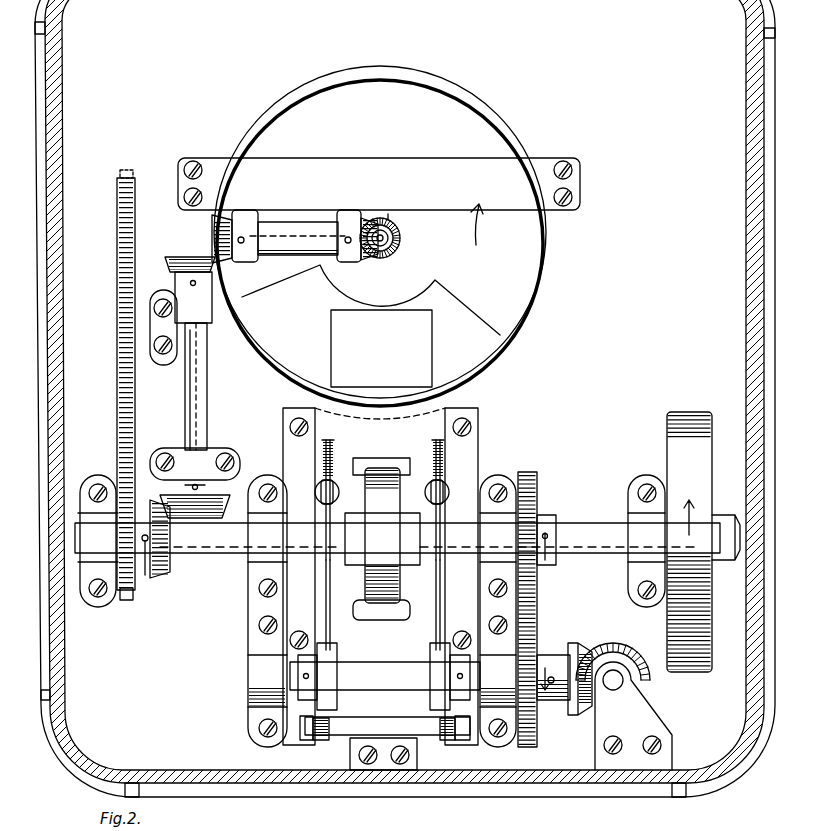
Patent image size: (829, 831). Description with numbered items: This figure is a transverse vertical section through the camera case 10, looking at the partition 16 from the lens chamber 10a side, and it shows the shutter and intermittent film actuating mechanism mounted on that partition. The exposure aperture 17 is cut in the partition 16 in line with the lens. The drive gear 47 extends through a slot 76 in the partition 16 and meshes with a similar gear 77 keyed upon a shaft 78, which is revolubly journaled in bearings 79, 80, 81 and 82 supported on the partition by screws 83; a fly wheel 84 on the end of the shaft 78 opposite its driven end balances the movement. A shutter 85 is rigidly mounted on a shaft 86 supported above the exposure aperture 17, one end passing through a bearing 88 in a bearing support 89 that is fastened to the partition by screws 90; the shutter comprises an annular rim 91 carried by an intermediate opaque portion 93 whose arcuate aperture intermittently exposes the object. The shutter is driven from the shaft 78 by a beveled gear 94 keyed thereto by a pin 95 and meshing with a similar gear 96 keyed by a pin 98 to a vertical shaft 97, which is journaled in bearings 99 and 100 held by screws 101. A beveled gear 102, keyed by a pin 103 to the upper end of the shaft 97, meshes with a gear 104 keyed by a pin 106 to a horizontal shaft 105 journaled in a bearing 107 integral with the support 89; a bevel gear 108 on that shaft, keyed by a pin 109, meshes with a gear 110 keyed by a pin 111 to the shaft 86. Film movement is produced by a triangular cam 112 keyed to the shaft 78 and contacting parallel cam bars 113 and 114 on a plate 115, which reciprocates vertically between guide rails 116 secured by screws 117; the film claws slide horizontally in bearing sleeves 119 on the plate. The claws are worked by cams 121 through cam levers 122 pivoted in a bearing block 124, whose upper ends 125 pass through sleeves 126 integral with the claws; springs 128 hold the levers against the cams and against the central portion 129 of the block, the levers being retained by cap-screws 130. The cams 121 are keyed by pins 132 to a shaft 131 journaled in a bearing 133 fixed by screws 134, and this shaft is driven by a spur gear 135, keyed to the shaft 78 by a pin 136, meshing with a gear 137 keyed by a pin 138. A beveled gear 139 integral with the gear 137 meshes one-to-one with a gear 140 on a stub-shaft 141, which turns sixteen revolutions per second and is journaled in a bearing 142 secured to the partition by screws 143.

The camera case 10 is at (736, 48).
The lens chamber 10a is at (612, 376).
The partition 16 is at (405, 398).
The exposure aperture 17 is at (412, 308).
The drive gear 47 is at (131, 176).
The slot 76 is at (117, 288).
The gear 77 is at (127, 600).
The shaft 78 is at (236, 554).
The bearing 79 is at (98, 541).
The bearing 80 is at (267, 611).
The bearing 81 is at (498, 611).
The bearing 82 is at (640, 541).
The screws 83 is at (99, 484).
The fly wheel 84 is at (682, 430).
The shutter 85 is at (468, 124).
The shaft 86 is at (392, 222).
The bearing 88 is at (401, 236).
The bearing support 89 is at (512, 173).
The screws 90 is at (184, 197).
The annular rim 91 is at (447, 90).
The opaque portion 93 is at (444, 180).
The beveled gear 94 is at (474, 330).
The pin 95 is at (147, 572).
The gear 96 is at (206, 518).
The shaft 97 is at (198, 404).
The pin 98 is at (192, 487).
The bearing 99 is at (182, 454).
The bearing 100 is at (208, 316).
The screws 101 is at (160, 356).
The beveled gear 102 is at (198, 264).
The pin 103 is at (190, 283).
The gear 104 is at (225, 215).
The shaft 105 is at (270, 230).
The pin 106 is at (244, 238).
The bearing 107 is at (264, 254).
The bevel gear 108 is at (367, 220).
The pin 109 is at (350, 232).
The gear 110 is at (396, 249).
The pin 111 is at (389, 213).
The triangular cam 112 is at (382, 535).
The cam bar 113 is at (376, 612).
The cam bar 114 is at (385, 470).
The plate 115 is at (421, 492).
The guide rails 116 is at (295, 410).
The screws 117 is at (290, 427).
The bearing sleeves 119 is at (315, 492).
The cams 121 is at (335, 662).
The cam levers 122 is at (332, 598).
The bearing block 124 is at (418, 745).
The upper ends 125 is at (324, 460).
The sleeves 126 is at (331, 486).
The springs 128 is at (323, 740).
The central portion 129 is at (370, 724).
The cap-screws 130 is at (303, 740).
The shaft 131 is at (385, 676).
The pins 132 is at (382, 683).
The bearing 133 is at (258, 680).
The screws 134 is at (259, 625).
The spur gear 135 is at (538, 502).
The pin 136 is at (547, 516).
The gear 137 is at (544, 653).
The pin 138 is at (551, 688).
The beveled gear 139 is at (583, 650).
The gear 140 is at (627, 650).
The stub-shaft 141 is at (614, 686).
The bearing 142 is at (641, 722).
The screws 143 is at (644, 748).